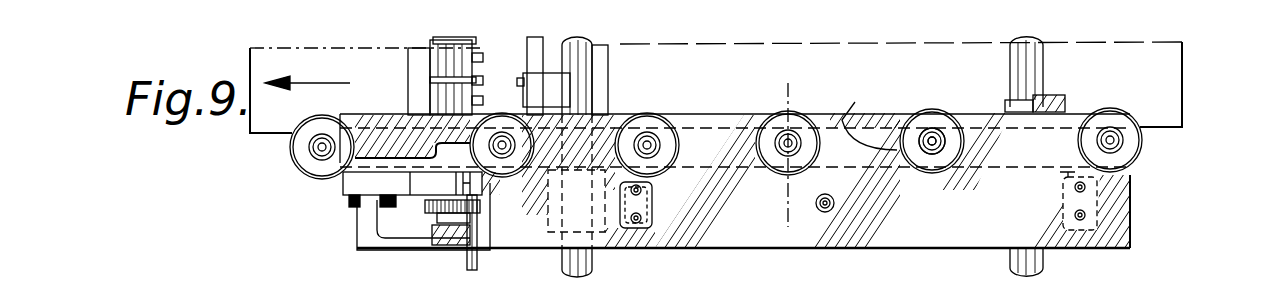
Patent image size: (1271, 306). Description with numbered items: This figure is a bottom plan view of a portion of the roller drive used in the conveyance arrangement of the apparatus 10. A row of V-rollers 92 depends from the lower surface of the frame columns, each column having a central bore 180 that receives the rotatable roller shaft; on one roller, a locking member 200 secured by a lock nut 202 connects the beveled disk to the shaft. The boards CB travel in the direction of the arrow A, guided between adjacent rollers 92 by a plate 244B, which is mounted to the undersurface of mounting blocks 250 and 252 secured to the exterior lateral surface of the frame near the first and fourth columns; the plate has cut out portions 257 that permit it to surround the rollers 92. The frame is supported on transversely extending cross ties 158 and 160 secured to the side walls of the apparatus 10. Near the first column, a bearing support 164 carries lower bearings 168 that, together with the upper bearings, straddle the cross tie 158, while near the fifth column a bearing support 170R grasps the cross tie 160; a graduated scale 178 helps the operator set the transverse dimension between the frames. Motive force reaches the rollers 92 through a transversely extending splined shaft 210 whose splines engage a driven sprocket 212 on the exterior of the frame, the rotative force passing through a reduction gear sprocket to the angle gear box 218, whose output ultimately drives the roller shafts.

The V-rollers 92 is at (328, 182).
The angle gear box 218 is at (432, 62).
The graduated scale 178 is at (528, 58).
The cross tie 160 is at (582, 60).
The bearing support 170R is at (605, 93).
The apparatus 10 is at (832, 72).
The cut out portions 257 is at (877, 112).
The lock nut 202 is at (933, 130).
The locking member 200 is at (947, 128).
The cross tie 158 is at (1027, 64).
The lower bearings 168 is at (1028, 95).
The bearing support 164 is at (1062, 107).
The boards CB is at (1160, 68).
The arrow A is at (340, 70).
The plate 244B is at (990, 227).
The driven sprocket 212 is at (443, 250).
The splined shaft 210 is at (480, 262).
The mounting block 252 is at (660, 238).
The mounting block 250 is at (1095, 222).
The central bore 180 is at (743, 277).